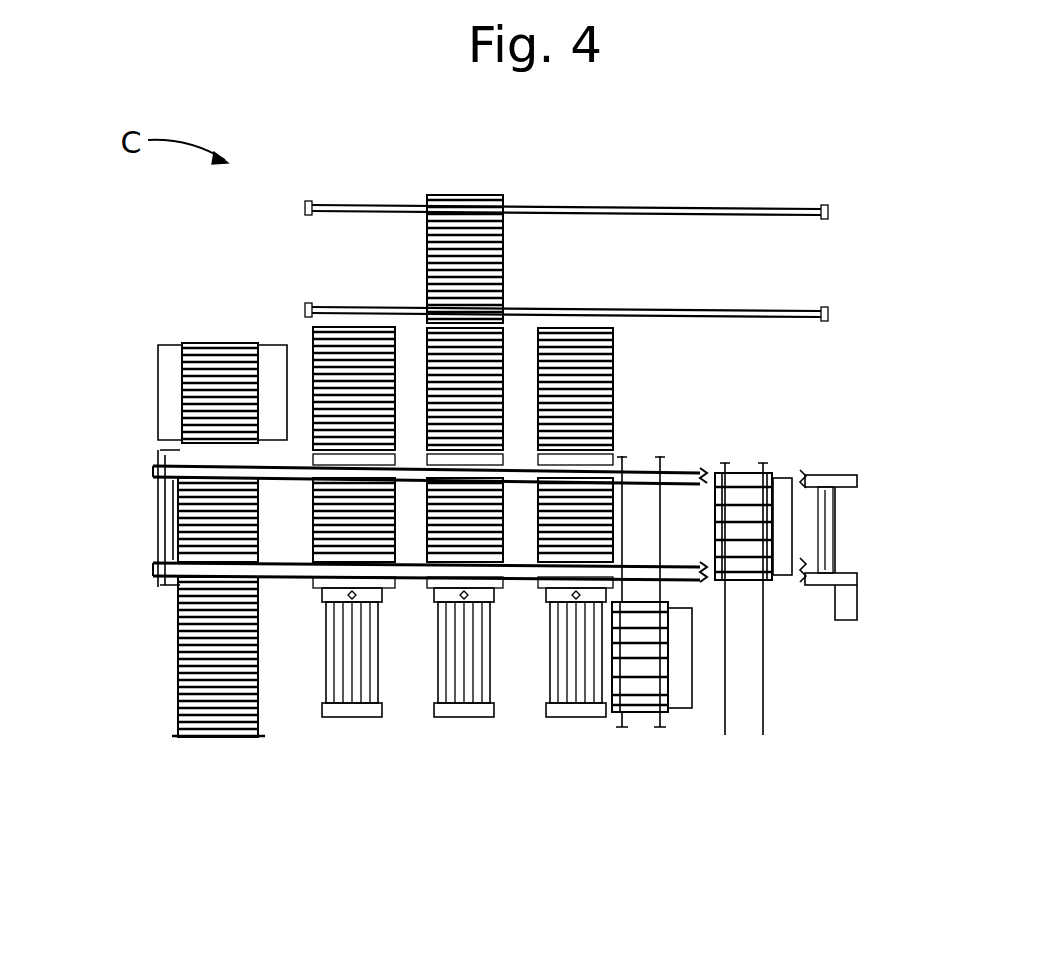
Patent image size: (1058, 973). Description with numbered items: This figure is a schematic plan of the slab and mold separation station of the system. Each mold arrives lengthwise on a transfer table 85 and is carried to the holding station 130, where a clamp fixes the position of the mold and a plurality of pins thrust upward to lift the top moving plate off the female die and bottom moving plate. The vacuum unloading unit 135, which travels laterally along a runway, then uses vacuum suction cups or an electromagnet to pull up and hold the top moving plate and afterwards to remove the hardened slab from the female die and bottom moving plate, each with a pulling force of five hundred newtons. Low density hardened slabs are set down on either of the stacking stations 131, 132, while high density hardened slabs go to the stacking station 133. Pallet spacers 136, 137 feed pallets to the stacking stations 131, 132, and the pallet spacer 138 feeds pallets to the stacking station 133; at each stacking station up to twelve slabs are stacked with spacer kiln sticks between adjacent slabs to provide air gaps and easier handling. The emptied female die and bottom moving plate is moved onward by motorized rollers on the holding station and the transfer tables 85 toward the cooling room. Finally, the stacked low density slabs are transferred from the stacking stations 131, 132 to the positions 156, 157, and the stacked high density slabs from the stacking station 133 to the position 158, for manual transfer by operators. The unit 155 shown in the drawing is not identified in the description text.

The transfer table 85 is at (183, 393).
The holding station 130 is at (200, 520).
The stacking station 131 is at (343, 530).
The stacking station 132 is at (460, 528).
The stacking station 133 is at (553, 530).
The vacuum unloading unit 135 is at (707, 470).
The pallet spacer 136 is at (352, 710).
The pallet spacer 137 is at (465, 707).
The pallet spacer 138 is at (575, 707).
The transfer unit 155 is at (765, 494).
The position 156 is at (360, 288).
The position 157 is at (458, 188).
The position 158 is at (576, 285).